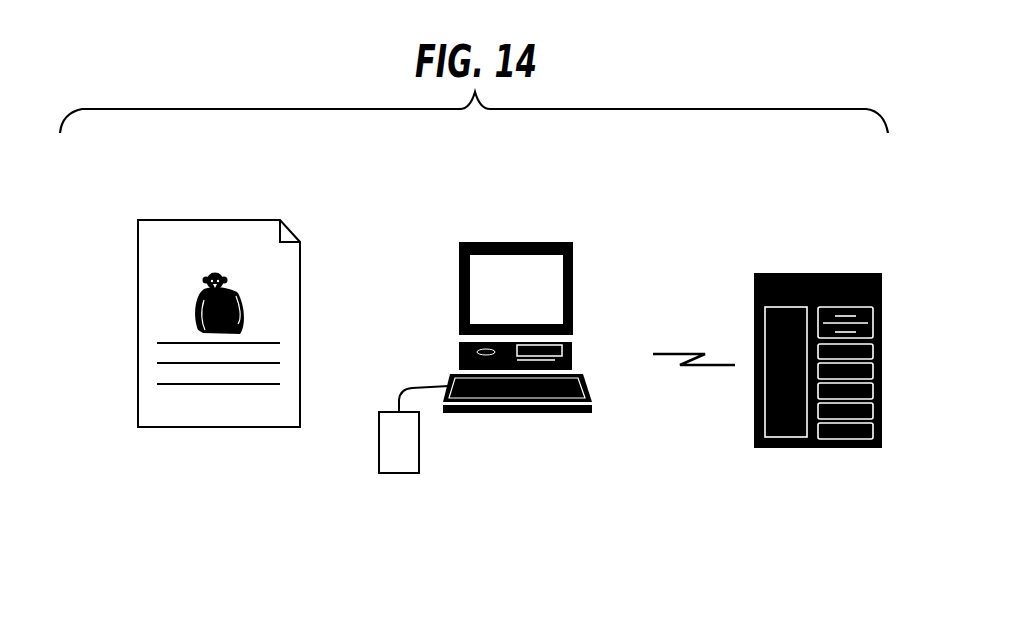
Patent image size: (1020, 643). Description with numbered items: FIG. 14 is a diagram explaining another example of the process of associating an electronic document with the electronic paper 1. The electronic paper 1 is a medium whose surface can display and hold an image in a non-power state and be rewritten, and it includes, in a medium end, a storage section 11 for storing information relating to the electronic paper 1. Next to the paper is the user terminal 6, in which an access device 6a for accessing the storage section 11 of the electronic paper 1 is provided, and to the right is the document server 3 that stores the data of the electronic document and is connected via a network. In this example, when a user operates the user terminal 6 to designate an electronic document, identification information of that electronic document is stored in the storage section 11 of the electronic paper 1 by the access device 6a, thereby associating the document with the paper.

The electronic paper 1 is at (118, 309).
The storage section 11 is at (216, 220).
The user terminal 6 is at (517, 243).
The access device 6a is at (400, 478).
The document server 3 is at (821, 273).